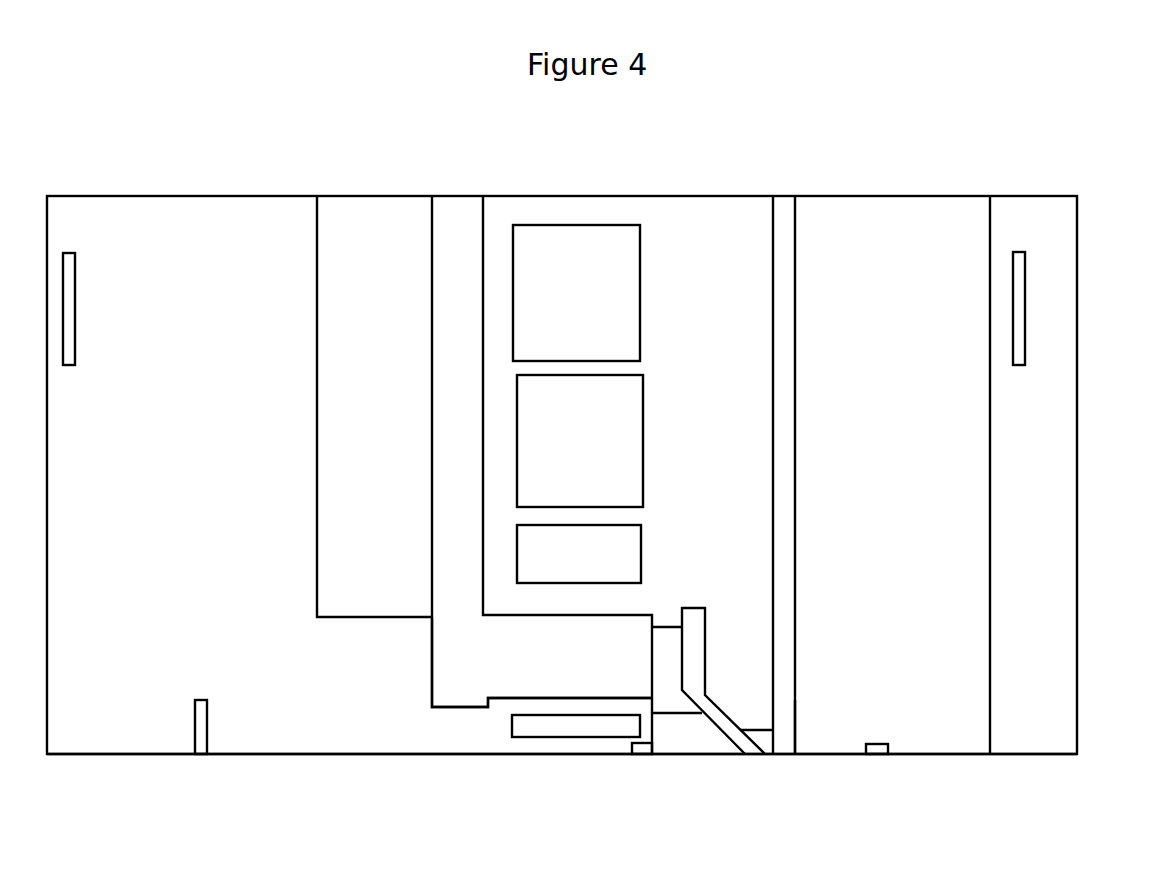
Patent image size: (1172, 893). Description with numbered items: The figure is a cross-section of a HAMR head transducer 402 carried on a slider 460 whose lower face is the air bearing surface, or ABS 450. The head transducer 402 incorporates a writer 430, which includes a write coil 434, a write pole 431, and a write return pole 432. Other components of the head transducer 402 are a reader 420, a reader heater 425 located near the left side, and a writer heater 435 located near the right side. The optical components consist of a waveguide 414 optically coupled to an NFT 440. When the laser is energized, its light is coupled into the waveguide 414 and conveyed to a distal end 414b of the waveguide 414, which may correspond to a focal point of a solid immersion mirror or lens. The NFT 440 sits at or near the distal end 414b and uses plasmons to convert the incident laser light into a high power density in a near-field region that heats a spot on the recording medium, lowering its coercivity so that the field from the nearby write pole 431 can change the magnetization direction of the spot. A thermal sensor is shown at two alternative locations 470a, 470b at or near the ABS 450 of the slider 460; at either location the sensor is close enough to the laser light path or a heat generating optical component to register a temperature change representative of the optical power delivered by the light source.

The head transducer 402 is at (1077, 320).
The waveguide 414 is at (796, 600).
The distal end of the waveguide 414b is at (797, 733).
The reader 420 is at (208, 713).
The reader heater 425 is at (69, 366).
The writer 430 is at (310, 325).
The write pole 431 is at (693, 625).
The write return pole 432 is at (430, 661).
The write coil 434 is at (634, 441).
The writer heater 435 is at (1018, 366).
The NFT 440 is at (755, 728).
The ABS 450 is at (107, 754).
The slider 460 is at (345, 732).
The thermal sensor location 470a is at (637, 742).
The thermal sensor location 470b is at (883, 743).